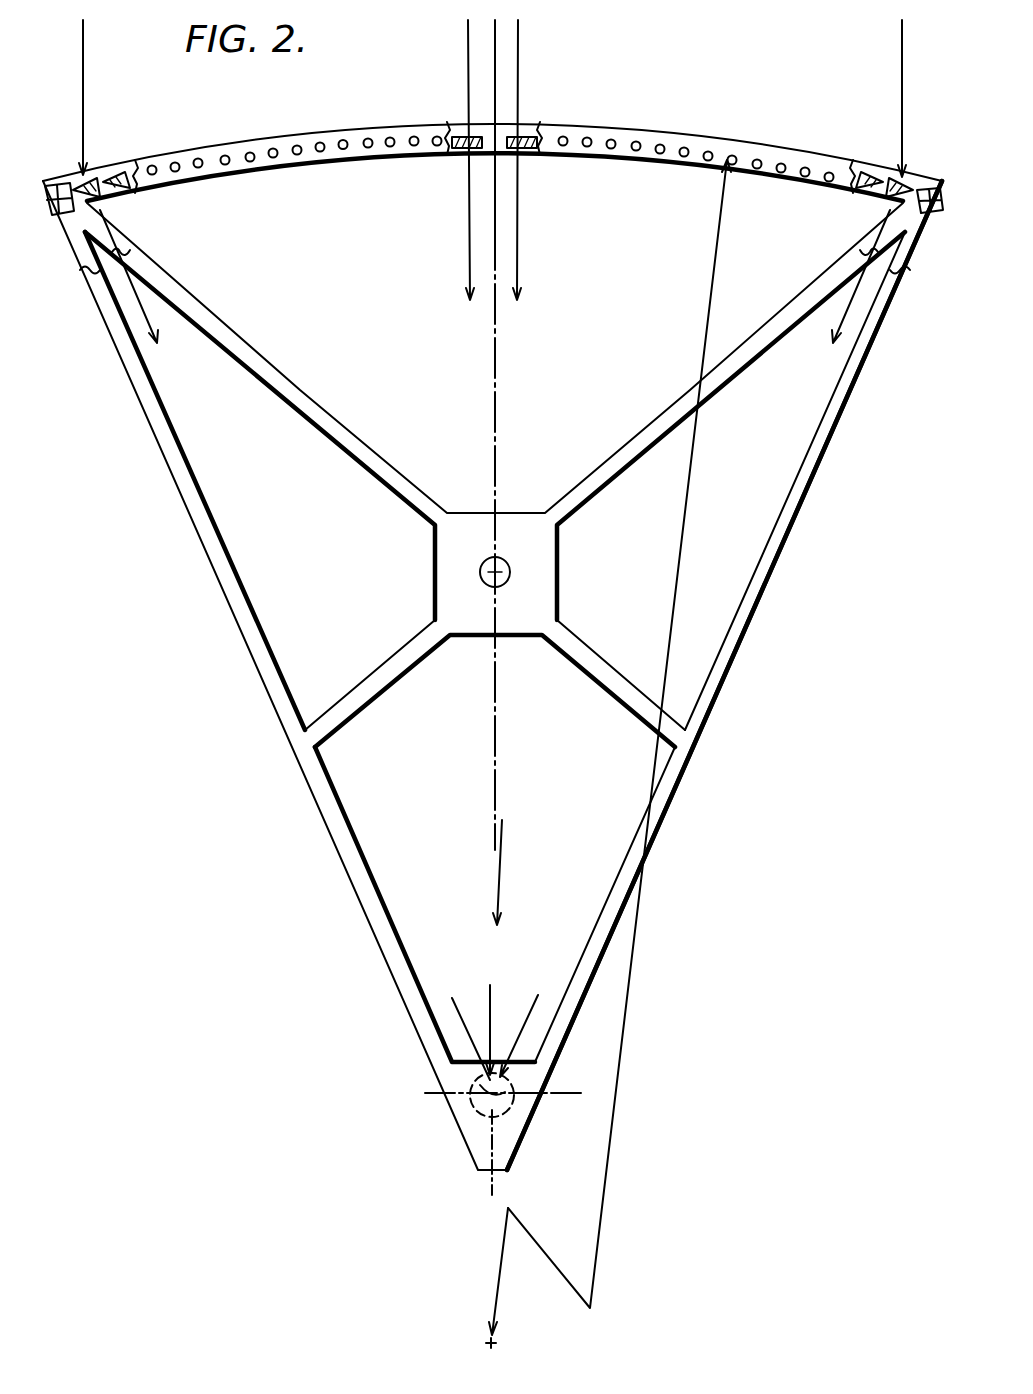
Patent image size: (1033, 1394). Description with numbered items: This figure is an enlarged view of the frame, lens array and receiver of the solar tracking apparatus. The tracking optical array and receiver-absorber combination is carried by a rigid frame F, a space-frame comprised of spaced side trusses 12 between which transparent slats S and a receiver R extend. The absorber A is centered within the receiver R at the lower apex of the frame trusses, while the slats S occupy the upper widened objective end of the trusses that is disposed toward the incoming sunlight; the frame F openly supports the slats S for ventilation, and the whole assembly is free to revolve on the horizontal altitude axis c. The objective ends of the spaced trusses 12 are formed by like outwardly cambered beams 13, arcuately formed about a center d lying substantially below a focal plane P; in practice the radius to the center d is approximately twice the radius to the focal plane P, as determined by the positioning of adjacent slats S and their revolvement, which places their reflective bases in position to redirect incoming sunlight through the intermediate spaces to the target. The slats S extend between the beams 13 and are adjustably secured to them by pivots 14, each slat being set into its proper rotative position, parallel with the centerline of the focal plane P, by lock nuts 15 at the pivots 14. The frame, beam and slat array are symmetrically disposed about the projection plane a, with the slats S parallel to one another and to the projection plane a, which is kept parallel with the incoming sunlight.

The side trusses 12 is at (740, 630).
The outwardly cambered beams 13 is at (625, 135).
The pivots 14 is at (300, 147).
The lock nuts 15 is at (696, 159).
The transparent slats S is at (130, 167).
The frame F is at (240, 634).
The projection plane a is at (500, 40).
The altitude axis c is at (498, 578).
The focal plane P is at (584, 1093).
The absorber A is at (475, 1108).
The receiver R is at (510, 1108).
The center d is at (485, 1337).